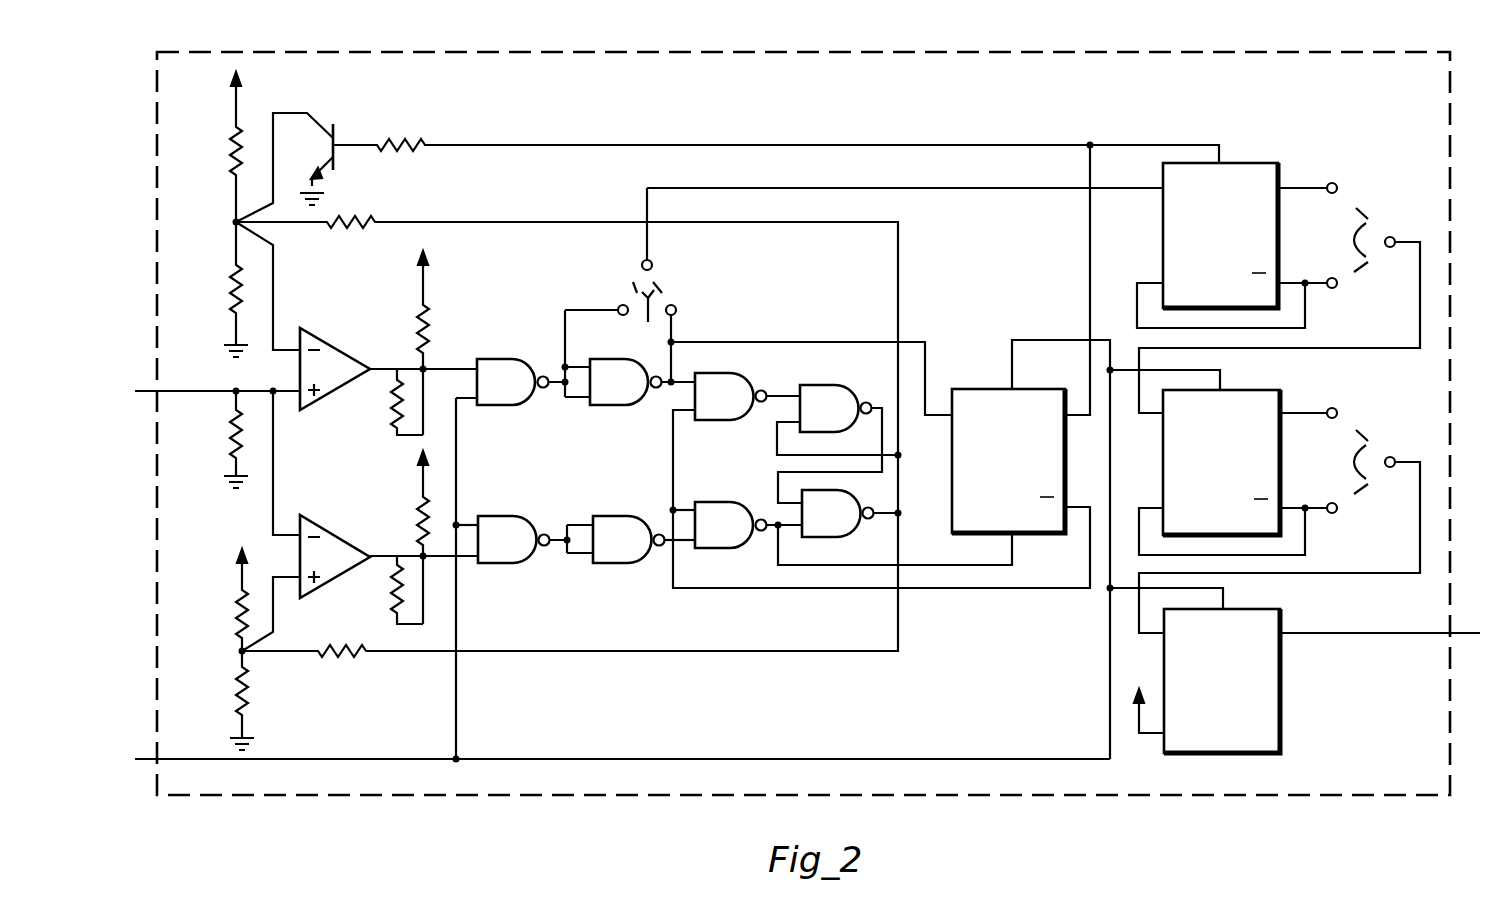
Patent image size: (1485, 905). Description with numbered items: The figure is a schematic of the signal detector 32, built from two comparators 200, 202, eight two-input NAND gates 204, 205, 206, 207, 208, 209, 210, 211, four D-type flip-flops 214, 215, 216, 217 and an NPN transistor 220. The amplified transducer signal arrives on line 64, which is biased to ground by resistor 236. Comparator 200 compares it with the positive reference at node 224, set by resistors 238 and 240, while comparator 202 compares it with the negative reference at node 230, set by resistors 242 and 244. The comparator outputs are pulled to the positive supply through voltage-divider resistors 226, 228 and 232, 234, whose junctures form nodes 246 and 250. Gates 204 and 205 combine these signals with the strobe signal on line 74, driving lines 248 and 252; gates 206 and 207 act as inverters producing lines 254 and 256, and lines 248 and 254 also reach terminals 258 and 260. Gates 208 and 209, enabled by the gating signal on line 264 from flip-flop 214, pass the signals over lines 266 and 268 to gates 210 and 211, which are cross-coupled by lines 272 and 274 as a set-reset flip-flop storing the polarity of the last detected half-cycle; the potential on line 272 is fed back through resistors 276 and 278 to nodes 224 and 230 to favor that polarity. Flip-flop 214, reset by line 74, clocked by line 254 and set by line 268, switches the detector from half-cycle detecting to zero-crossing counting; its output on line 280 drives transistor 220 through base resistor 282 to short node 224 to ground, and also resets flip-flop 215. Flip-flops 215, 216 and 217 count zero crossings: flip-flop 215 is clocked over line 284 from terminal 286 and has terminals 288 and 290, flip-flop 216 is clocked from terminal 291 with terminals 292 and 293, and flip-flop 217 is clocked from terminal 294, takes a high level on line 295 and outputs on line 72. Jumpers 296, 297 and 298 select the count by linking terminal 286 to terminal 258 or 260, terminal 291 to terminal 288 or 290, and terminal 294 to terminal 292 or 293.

The signal detector 32 is at (982, 795).
The line 64 is at (184, 391).
The line 72 is at (1368, 636).
The line 74 is at (170, 759).
The comparator 200 is at (338, 328).
The comparator 202 is at (328, 528).
The NAND gate 204 is at (526, 396).
The NAND gate 205 is at (528, 554).
The NAND gate 206 is at (640, 396).
The NAND gate 207 is at (643, 554).
The NAND gate 208 is at (745, 410).
The NAND gate 209 is at (745, 539).
The NAND gate 210 is at (848, 422).
The NAND gate 211 is at (852, 527).
The D-type flip-flop 214 is at (1029, 472).
The D-type flip-flop 215 is at (1241, 244).
The D-type flip-flop 216 is at (1243, 472).
The D-type flip-flop 217 is at (1243, 692).
The NPN transistor 220 is at (333, 126).
The node 224 is at (230, 222).
The voltage-divider resistor 226 is at (392, 403).
The voltage-divider resistor 228 is at (430, 322).
The node 230 is at (234, 652).
The voltage-divider resistor 232 is at (392, 592).
The voltage-divider resistor 234 is at (418, 507).
The biasing resistor 236 is at (232, 430).
The voltage-divider resistor 238 is at (228, 152).
The voltage-divider resistor 240 is at (228, 294).
The voltage-divider resistor 242 is at (234, 596).
The voltage-divider resistor 244 is at (236, 703).
The node 246 is at (412, 362).
The line 248 is at (562, 332).
The node 250 is at (418, 550).
The line 252 is at (574, 522).
The line 254 is at (762, 340).
The line 256 is at (672, 548).
The terminal 258 is at (617, 306).
The terminal 260 is at (677, 310).
The line 264 is at (668, 474).
The line 266 is at (778, 390).
The line 268 is at (838, 572).
The line 272 is at (900, 276).
The line 274 is at (778, 482).
The voltage divider resistor 276 is at (343, 216).
The voltage divider resistor 278 is at (346, 658).
The line 280 is at (778, 140).
The base current limiting resistor 282 is at (405, 140).
The line 284 is at (962, 188).
The terminal 286 is at (641, 264).
The terminal 288 is at (1338, 288).
The terminal 290 is at (1338, 184).
The terminal 291 is at (1393, 236).
The terminal 292 is at (1338, 512).
The terminal 293 is at (1338, 413).
The terminal 294 is at (1408, 448).
The line 295 is at (1150, 736).
The jumper 296 is at (634, 314).
The jumper 297 is at (1334, 240).
The jumper 298 is at (1337, 462).